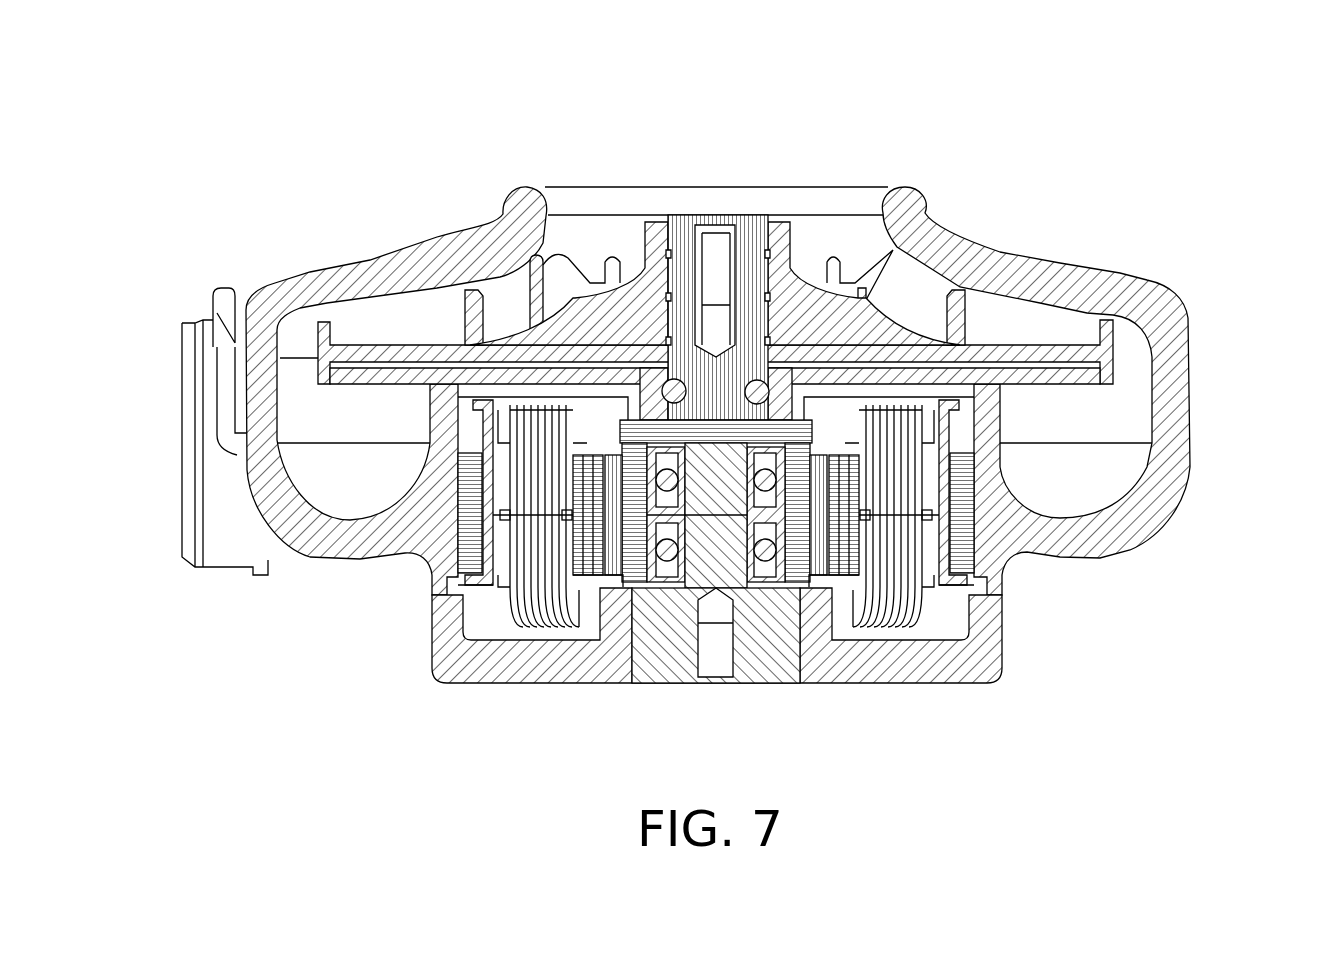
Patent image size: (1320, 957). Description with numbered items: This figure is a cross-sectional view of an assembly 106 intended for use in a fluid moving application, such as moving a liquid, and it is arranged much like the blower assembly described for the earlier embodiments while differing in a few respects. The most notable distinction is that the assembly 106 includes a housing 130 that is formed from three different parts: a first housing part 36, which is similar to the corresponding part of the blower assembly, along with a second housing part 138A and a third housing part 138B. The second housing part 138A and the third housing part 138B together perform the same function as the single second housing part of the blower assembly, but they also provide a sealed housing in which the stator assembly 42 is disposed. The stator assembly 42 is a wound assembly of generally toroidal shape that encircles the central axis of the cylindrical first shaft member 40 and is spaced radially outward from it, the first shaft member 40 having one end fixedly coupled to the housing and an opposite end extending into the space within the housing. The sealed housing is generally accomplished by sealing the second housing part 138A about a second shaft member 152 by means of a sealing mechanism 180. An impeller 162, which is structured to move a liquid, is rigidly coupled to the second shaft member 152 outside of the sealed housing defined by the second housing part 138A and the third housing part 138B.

The assembly 106 is at (288, 150).
The second shaft member 152 is at (673, 353).
The sealing mechanism 180 is at (769, 390).
The impeller 162 is at (803, 287).
The first housing part 36 is at (1120, 287).
The housing 130 is at (1207, 406).
The second housing part 138A is at (1142, 527).
The third housing part 138B is at (990, 642).
The stator assembly 42 is at (494, 631).
The first shaft member 40 is at (660, 665).